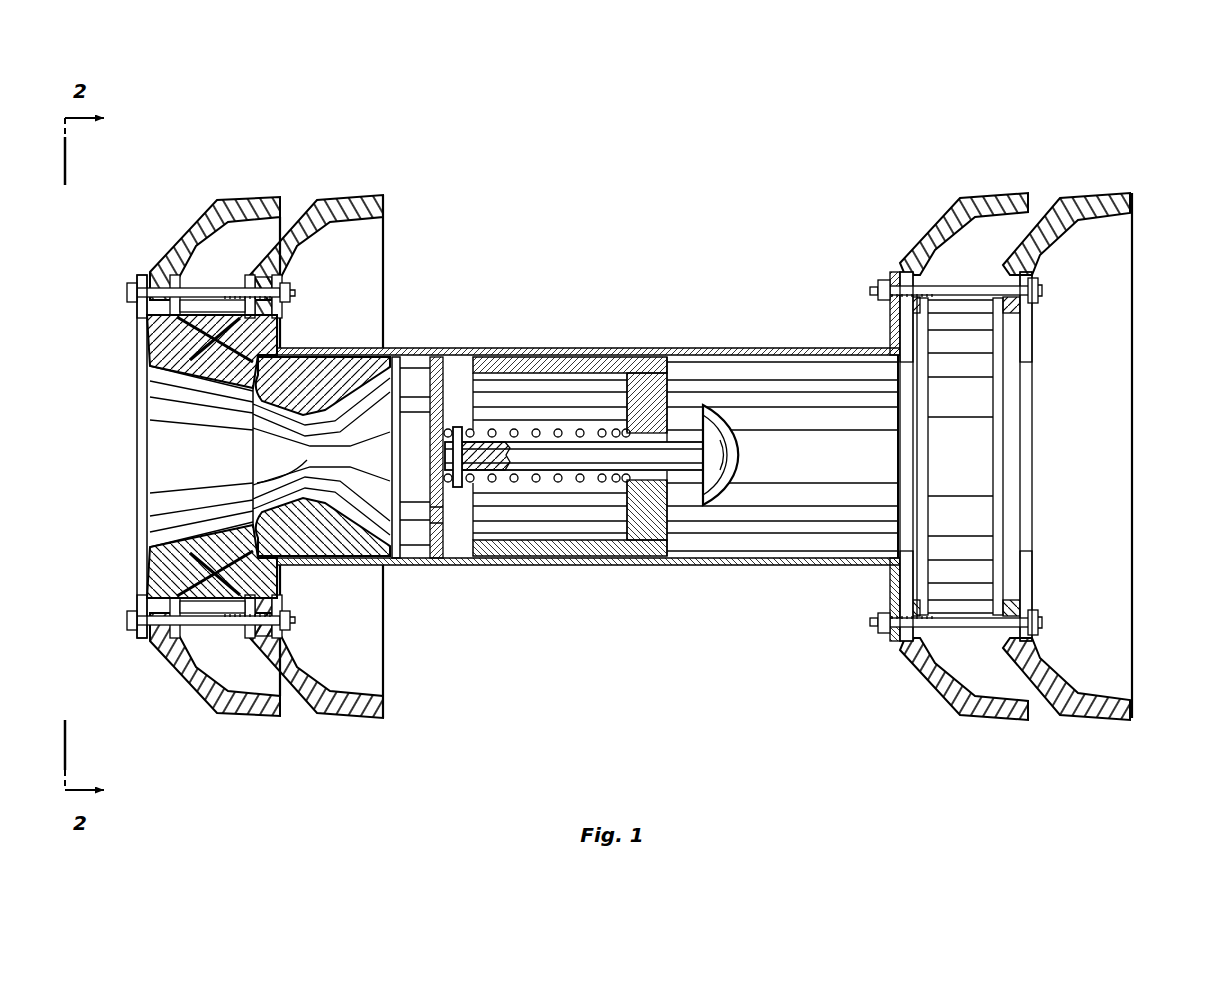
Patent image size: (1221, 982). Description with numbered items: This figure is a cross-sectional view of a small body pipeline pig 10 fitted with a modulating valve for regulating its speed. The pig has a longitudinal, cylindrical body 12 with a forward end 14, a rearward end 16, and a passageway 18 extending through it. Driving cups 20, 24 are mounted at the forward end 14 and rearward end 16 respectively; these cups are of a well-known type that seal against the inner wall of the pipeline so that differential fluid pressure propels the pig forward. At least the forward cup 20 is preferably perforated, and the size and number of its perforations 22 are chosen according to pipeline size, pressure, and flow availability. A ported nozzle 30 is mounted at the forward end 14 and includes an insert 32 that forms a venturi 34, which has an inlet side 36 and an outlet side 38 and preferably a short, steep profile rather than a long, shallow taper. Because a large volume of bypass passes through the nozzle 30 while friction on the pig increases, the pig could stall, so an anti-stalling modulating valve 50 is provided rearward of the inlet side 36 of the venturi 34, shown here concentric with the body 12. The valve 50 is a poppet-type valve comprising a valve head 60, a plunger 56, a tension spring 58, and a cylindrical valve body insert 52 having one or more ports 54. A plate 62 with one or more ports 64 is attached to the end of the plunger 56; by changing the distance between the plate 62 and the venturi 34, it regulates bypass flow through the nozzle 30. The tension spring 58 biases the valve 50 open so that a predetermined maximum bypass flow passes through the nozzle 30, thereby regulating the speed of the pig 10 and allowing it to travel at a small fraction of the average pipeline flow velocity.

The pipeline pig 10 is at (588, 371).
The cylindrical body 12 is at (732, 348).
The forward end 14 is at (128, 266).
The rearward end 16 is at (1142, 264).
The passageway 18 is at (783, 400).
The driving cup 20 is at (262, 183).
The perforations 22 is at (200, 225).
The driving cup 24 is at (963, 188).
The ported nozzle 30 is at (132, 380).
The insert 32 is at (325, 348).
The venturi 34 is at (253, 489).
The inlet side 36 is at (397, 472).
The outlet side 38 is at (252, 452).
The modulating valve 50 is at (615, 454).
The valve body insert 52 is at (532, 350).
The ports 54 is at (640, 500).
The plunger 56 is at (688, 472).
The tension spring 58 is at (563, 486).
The valve head 60 is at (725, 465).
The plate 62 is at (454, 565).
The ports 64 is at (447, 400).